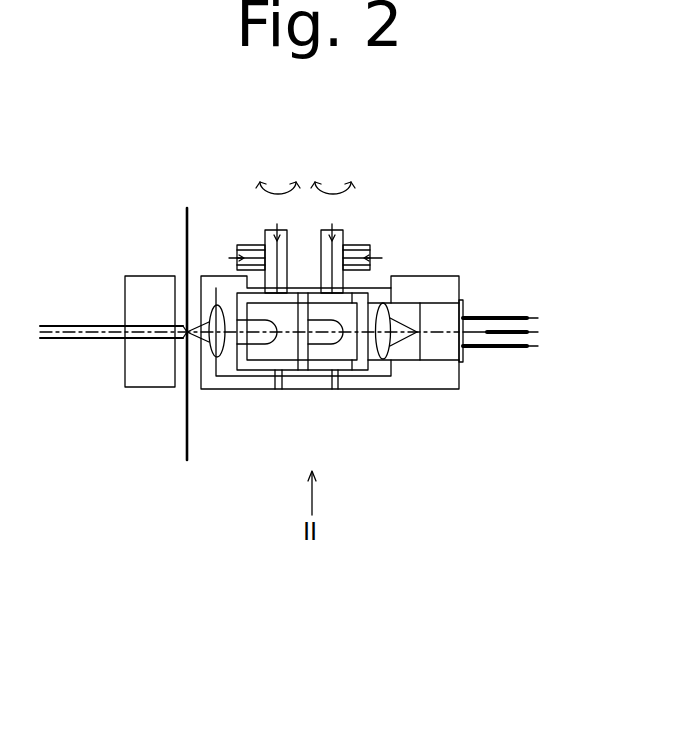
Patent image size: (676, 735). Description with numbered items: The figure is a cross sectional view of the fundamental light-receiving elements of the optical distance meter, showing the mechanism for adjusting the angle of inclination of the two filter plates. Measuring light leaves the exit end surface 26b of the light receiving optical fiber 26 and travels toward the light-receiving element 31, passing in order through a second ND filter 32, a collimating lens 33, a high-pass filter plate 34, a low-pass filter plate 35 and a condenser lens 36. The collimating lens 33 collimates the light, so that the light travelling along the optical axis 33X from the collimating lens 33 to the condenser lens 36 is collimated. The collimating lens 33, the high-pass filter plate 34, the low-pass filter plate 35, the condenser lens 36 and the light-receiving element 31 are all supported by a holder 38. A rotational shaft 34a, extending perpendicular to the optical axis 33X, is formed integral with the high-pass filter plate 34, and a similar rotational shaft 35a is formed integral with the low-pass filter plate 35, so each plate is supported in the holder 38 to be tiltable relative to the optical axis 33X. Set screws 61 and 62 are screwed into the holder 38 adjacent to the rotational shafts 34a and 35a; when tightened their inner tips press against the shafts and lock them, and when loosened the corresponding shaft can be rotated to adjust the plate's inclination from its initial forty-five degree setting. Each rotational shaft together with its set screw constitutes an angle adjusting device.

The light receiving optical fiber 26 is at (52, 324).
The exit end surface 26b is at (183, 342).
The light-receiving element 31 is at (438, 354).
The second ND filter 32 is at (141, 336).
The collimating lens 33 is at (217, 303).
The optical axis 33X is at (232, 364).
The high-pass filter plate 34 is at (280, 368).
The low-pass filter plate 35 is at (337, 368).
The rotational shaft 34a is at (264, 238).
The rotational shaft 35a is at (346, 235).
The condenser lens 36 is at (384, 310).
The holder 38 is at (449, 283).
The set screw 61 is at (243, 247).
The set screw 62 is at (372, 250).